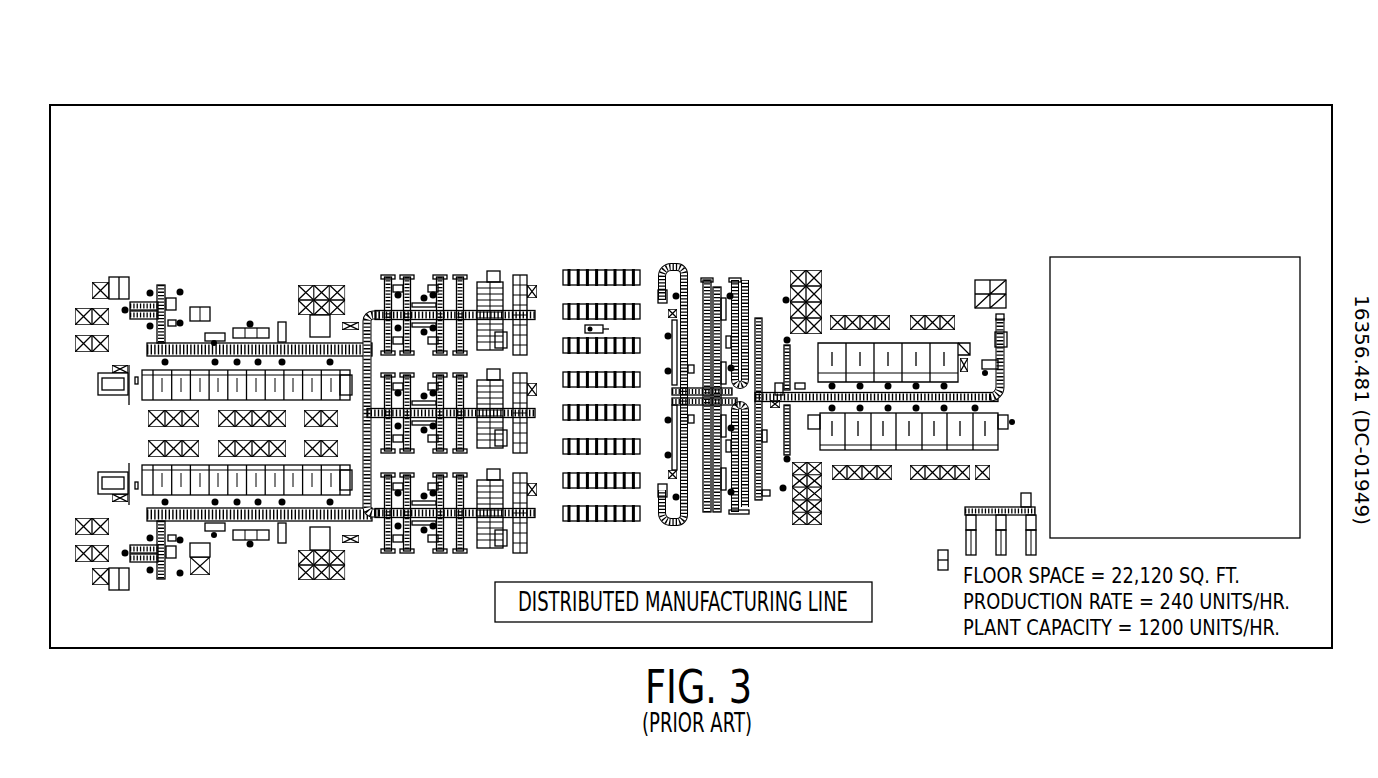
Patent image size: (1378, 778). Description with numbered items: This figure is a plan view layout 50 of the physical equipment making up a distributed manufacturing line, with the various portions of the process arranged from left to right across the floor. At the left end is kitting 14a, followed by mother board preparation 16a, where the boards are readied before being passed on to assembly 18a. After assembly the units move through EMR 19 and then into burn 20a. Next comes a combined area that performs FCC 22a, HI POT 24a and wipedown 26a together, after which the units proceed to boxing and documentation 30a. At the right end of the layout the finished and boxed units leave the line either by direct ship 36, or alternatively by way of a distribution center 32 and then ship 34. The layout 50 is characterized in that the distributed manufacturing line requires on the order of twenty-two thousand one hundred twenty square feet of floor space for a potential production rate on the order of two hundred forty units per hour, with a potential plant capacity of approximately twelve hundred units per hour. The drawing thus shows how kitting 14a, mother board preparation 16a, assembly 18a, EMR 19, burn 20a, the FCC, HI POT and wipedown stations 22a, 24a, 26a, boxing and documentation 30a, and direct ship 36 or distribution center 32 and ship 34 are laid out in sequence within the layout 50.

The layout 50 is at (1054, 78).
The kitting 14a is at (252, 184).
The mother board preparation 16a is at (252, 585).
The assembly 18a is at (436, 184).
The EMR 19 is at (534, 184).
The burn 20a is at (606, 184).
The FCC 22a is at (715, 258).
The HI POT 24a is at (721, 344).
The wipedown 26a is at (741, 358).
The boxing and documentation 30a is at (906, 184).
The direct ship 36 is at (1183, 180).
The distribution center 32 is at (1175, 397).
The ship 34 is at (1175, 397).